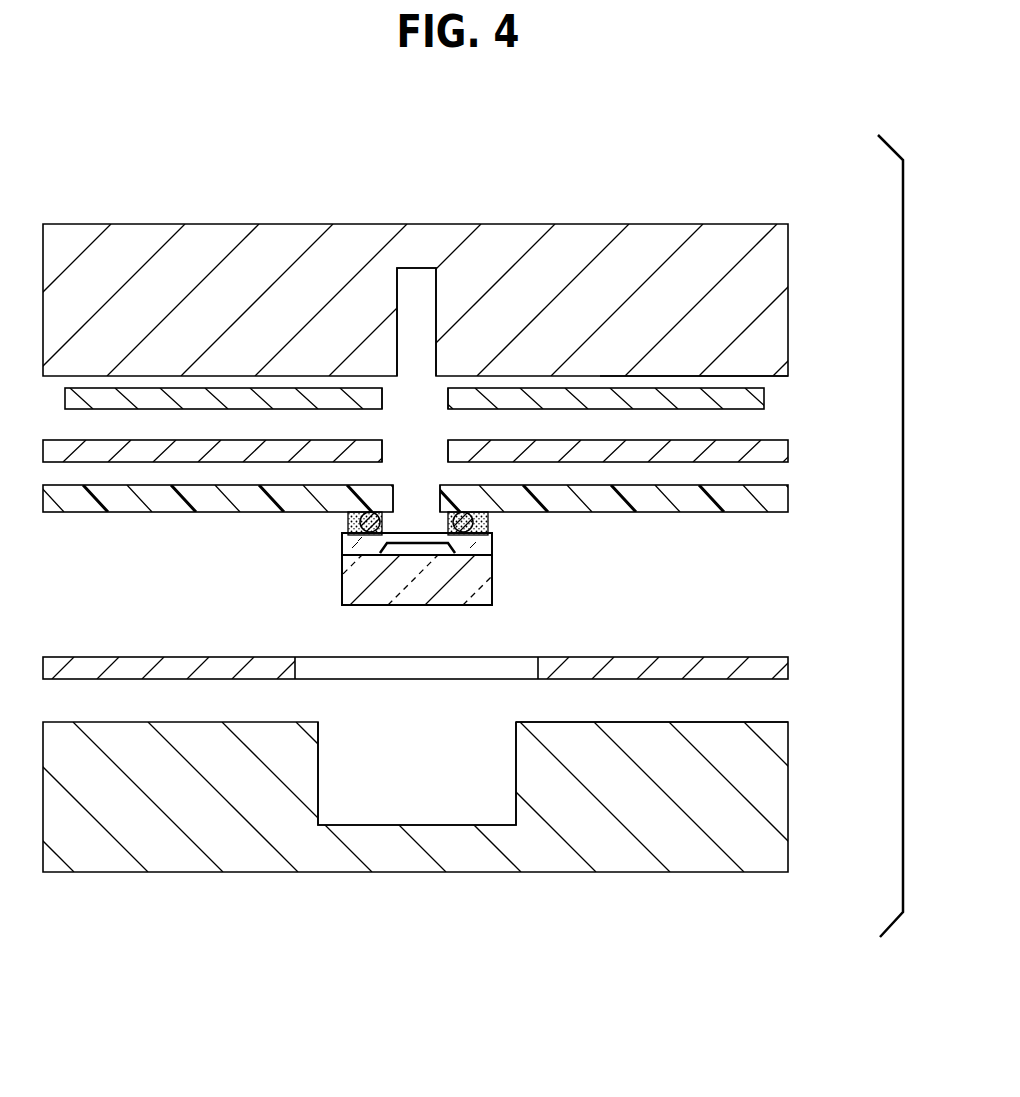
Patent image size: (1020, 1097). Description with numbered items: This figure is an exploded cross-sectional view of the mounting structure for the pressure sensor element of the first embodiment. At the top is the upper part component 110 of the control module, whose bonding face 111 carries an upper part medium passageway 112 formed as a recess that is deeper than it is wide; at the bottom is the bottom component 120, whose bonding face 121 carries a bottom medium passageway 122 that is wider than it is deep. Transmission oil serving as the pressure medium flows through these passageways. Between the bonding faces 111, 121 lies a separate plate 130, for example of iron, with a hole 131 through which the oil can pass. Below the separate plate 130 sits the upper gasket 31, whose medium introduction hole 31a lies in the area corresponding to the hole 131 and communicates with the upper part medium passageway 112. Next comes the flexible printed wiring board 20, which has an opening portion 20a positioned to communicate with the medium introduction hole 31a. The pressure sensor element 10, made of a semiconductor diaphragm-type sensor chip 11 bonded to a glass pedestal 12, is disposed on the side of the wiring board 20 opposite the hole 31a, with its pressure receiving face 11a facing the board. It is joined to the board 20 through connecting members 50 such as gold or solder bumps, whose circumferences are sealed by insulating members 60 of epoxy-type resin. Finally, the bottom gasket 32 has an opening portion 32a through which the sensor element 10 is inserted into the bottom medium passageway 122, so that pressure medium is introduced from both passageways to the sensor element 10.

The pressure sensor element 10 is at (776, 558).
The sensor chip 11 is at (483, 543).
The pressure receiving face 11a is at (413, 533).
The glass pedestal 12 is at (480, 585).
The flexible printed wiring board 20 is at (768, 497).
The opening portion 20a is at (430, 503).
The upper gasket 31 is at (777, 450).
The medium introduction hole 31a is at (402, 452).
The bottom gasket 32 is at (777, 670).
The opening portion 32a is at (372, 667).
The connecting member 50 is at (345, 528).
The insulating member 60 is at (347, 520).
The upper part component 110 is at (775, 278).
The bonding face 111 is at (773, 376).
The upper part medium passageway 112 is at (410, 283).
The bottom component 120 is at (772, 785).
The bonding face 121 is at (750, 722).
The bottom medium passageway 122 is at (408, 802).
The separate plate 130 is at (758, 398).
The hole 131 is at (392, 400).